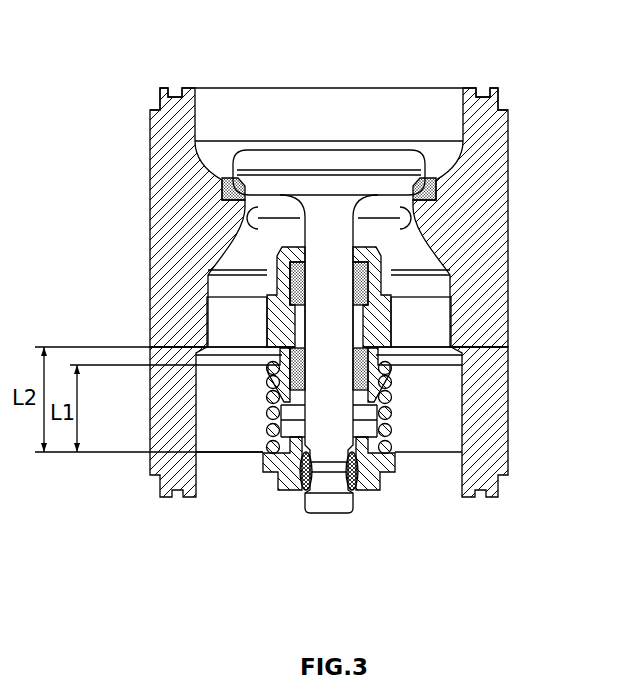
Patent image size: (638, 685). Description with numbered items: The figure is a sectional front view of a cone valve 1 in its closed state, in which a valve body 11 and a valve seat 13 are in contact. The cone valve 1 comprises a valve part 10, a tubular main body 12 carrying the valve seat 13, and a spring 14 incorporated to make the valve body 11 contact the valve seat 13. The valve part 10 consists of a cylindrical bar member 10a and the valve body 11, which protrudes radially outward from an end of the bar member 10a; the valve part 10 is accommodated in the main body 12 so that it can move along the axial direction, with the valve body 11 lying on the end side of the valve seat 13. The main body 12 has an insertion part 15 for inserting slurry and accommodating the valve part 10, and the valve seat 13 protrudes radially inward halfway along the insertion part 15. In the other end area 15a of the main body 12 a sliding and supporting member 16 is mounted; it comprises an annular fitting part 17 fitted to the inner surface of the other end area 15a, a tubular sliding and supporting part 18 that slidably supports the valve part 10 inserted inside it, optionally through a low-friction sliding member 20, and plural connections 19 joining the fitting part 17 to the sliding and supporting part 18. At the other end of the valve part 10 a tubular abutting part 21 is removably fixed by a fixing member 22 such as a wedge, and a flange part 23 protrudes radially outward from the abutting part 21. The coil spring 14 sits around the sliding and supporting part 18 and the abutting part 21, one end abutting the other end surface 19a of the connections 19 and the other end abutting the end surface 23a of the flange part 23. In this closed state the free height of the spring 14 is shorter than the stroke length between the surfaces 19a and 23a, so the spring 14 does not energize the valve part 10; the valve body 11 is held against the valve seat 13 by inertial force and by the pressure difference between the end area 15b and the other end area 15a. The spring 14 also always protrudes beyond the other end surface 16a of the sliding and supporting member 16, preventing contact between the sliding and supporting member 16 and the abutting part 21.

The cone valve 1 is at (589, 29).
The valve part 10 is at (332, 157).
The cylindrical bar member 10a is at (332, 337).
The valve body 11 is at (420, 158).
The main body 12 is at (149, 108).
The valve seat 13 is at (245, 222).
The spring 14 is at (392, 413).
The insertion part 15 is at (329, 296).
The other end area 15a is at (223, 470).
The end area 15b is at (247, 117).
The sliding and supporting member 16 is at (382, 258).
The other end surface of the sliding and supporting member 16a is at (295, 497).
The fitting part 17 is at (435, 305).
The sliding and supporting part 18 is at (370, 293).
The connections 19 is at (430, 300).
The other end surface of the connections 19a is at (368, 352).
The sliding member 20 is at (300, 283).
The abutting part 21 is at (366, 490).
The fixing member 22 is at (357, 497).
The flange part 23 is at (358, 483).
The end surface of the flange part 23a is at (378, 438).